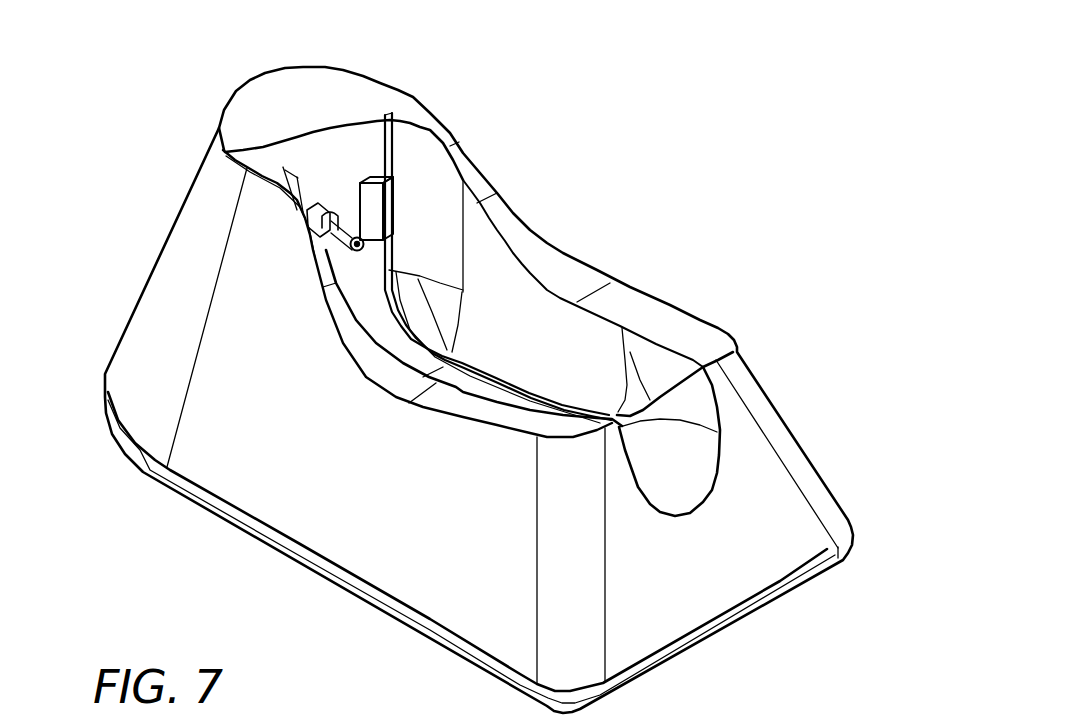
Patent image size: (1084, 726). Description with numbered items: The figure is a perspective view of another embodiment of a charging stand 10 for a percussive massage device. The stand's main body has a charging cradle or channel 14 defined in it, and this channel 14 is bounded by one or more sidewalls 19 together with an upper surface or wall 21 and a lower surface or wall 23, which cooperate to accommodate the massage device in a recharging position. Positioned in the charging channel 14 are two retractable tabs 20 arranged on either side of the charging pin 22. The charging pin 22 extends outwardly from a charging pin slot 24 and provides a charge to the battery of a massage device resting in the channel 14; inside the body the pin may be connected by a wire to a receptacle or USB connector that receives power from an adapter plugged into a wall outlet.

The charging stand 10 is at (479, 390).
The charging channel 14 is at (575, 340).
The sidewall 19 is at (546, 273).
The retractable tab 20 is at (299, 139).
The upper wall 21 is at (485, 230).
The charging pin 22 is at (240, 209).
The lower wall 23 is at (744, 441).
The charging pin slot 24 is at (319, 127).